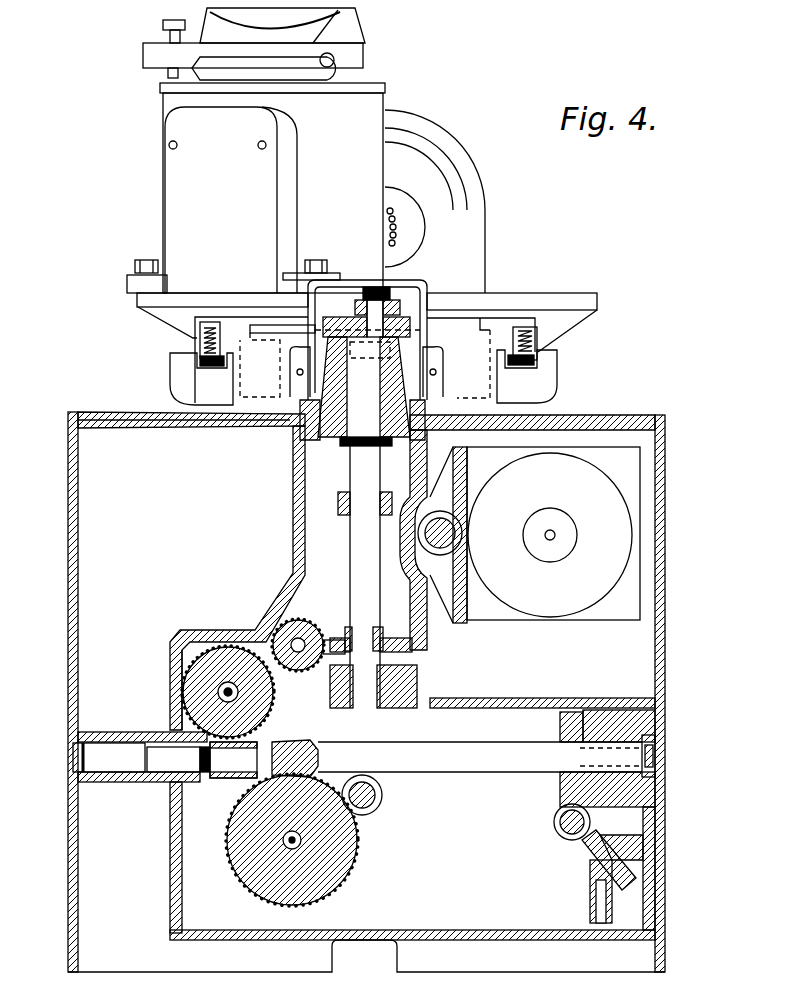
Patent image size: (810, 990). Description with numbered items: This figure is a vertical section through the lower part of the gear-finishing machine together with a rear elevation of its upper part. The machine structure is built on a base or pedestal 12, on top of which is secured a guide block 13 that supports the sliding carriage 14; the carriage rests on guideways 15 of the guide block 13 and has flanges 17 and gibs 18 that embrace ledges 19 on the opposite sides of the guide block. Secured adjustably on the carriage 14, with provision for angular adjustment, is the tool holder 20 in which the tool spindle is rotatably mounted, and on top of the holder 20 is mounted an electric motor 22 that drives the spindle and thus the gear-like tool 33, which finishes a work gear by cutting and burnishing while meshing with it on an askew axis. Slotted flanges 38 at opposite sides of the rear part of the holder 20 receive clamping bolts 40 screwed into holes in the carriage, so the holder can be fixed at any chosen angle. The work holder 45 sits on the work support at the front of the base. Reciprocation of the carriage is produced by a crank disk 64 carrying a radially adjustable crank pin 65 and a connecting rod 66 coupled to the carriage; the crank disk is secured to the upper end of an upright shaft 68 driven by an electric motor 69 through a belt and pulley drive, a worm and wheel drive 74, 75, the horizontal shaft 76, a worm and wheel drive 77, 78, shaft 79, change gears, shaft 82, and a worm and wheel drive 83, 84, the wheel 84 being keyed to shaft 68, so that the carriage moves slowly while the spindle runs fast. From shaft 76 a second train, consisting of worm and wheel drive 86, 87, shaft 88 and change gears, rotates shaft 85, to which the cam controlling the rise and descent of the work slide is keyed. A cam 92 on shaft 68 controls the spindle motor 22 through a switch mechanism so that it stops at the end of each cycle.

The base 12 is at (68, 598).
The guide block 13 is at (273, 408).
The sliding carriage 14 is at (516, 295).
The guideways 15 is at (243, 331).
The flanges 17 is at (197, 341).
The gibs 18 is at (203, 368).
The ledges 19 is at (224, 335).
The holder 20 is at (367, 114).
The electric motor 22 is at (333, 15).
The gear-like tool 33 is at (393, 218).
The slotted flanges 38 is at (128, 285).
The clamping bolts 40 is at (148, 260).
The holder 45 is at (478, 233).
The crank disk 64 is at (343, 323).
The crank pin 65 is at (378, 320).
The connecting rod 66 is at (398, 290).
The upright shaft 68 is at (353, 549).
The electric motor 69 is at (562, 605).
The worm 74 is at (568, 833).
The wheel 75 is at (567, 793).
The shaft 76 is at (483, 770).
The worm 77 is at (227, 786).
The wheel 78 is at (210, 648).
The shaft 79 is at (212, 674).
The shaft 82 is at (320, 640).
The worm 83 is at (288, 637).
The wheel 84 is at (403, 640).
The shaft 85 is at (384, 812).
The worm 86 is at (297, 740).
The wheel 87 is at (250, 868).
The shaft 88 is at (300, 843).
The cam 92 is at (342, 510).